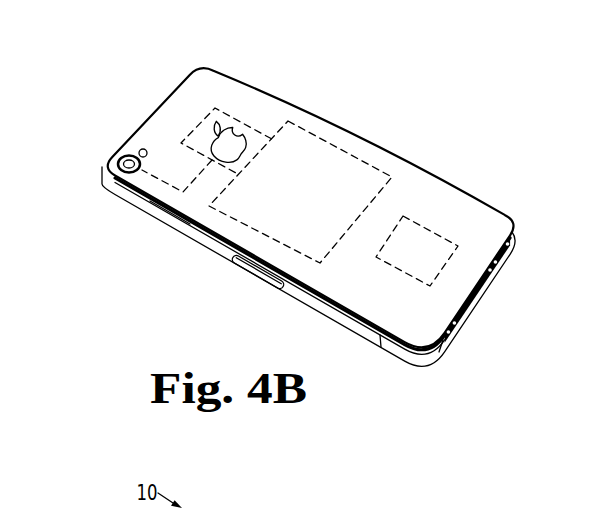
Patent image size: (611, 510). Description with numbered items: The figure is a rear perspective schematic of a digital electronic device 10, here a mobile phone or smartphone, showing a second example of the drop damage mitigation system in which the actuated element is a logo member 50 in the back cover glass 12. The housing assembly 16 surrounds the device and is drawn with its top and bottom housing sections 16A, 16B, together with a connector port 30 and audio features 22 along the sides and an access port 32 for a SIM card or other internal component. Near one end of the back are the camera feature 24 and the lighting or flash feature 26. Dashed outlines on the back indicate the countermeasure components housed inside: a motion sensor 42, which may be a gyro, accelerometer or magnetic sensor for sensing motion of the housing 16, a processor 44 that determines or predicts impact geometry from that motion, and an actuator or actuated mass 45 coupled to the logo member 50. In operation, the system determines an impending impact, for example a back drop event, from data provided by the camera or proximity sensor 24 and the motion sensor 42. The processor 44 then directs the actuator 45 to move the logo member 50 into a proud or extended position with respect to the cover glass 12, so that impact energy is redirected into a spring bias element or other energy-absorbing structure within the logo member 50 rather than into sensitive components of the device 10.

The digital electronic device 10 is at (483, 92).
The cover glass 12 is at (477, 219).
The housing assembly 16 is at (204, 279).
The top housing section 16A is at (397, 355).
The bottom housing section 16B is at (191, 238).
The audio features 22 is at (513, 250).
The camera feature 24 is at (119, 160).
The lighting and indicator feature 26 is at (140, 150).
The connector port 30 is at (481, 297).
The access port 32 is at (259, 279).
The motion sensor 42 is at (441, 235).
The processor 44 is at (346, 134).
The actuator 45 is at (252, 130).
The logo member 50 is at (232, 128).